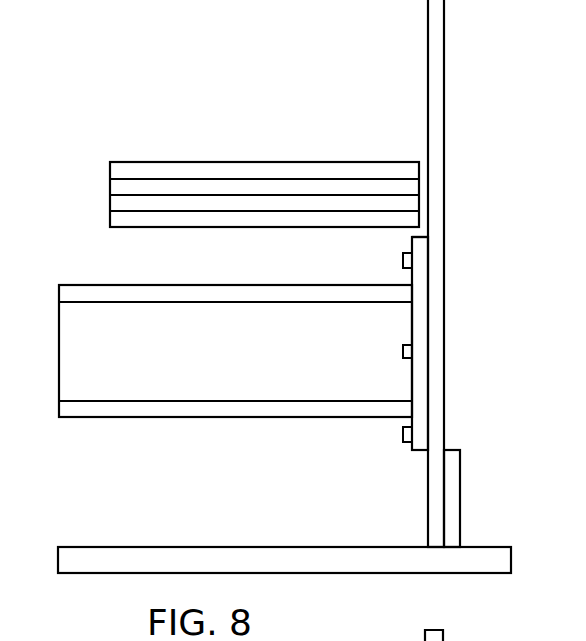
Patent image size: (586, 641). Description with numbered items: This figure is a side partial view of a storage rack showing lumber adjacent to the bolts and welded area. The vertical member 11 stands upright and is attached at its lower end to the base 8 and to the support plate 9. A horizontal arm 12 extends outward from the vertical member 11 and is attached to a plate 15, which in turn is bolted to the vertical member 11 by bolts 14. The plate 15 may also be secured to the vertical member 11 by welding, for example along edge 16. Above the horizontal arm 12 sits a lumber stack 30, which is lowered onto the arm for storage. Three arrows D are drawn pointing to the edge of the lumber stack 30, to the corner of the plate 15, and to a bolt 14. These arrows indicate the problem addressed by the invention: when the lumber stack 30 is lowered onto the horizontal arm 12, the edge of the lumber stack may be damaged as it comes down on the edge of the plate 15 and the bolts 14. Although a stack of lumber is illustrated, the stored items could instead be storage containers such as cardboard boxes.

The base 8 is at (265, 547).
The support plate 9 is at (460, 478).
The vertical member 11 is at (444, 103).
The horizontal arm 12 is at (120, 284).
The bolts 14 is at (412, 259).
The plate 15 is at (420, 325).
The edge 16 is at (428, 237).
The lumber stack 30 is at (350, 162).
The arrows D is at (412, 238).